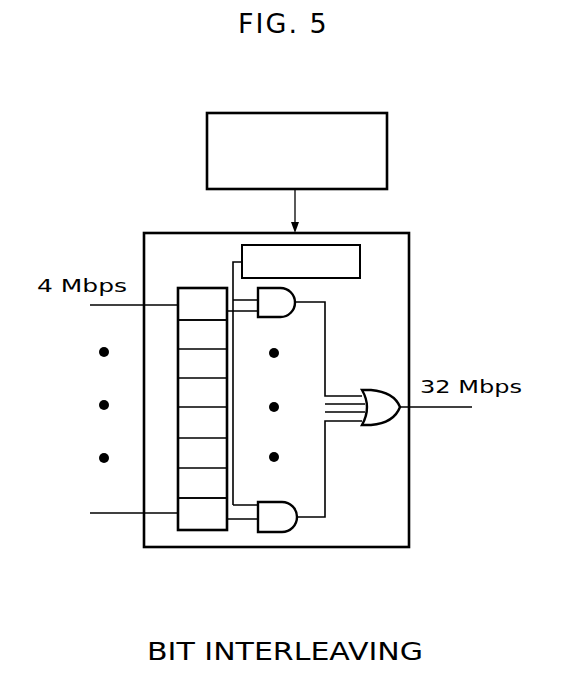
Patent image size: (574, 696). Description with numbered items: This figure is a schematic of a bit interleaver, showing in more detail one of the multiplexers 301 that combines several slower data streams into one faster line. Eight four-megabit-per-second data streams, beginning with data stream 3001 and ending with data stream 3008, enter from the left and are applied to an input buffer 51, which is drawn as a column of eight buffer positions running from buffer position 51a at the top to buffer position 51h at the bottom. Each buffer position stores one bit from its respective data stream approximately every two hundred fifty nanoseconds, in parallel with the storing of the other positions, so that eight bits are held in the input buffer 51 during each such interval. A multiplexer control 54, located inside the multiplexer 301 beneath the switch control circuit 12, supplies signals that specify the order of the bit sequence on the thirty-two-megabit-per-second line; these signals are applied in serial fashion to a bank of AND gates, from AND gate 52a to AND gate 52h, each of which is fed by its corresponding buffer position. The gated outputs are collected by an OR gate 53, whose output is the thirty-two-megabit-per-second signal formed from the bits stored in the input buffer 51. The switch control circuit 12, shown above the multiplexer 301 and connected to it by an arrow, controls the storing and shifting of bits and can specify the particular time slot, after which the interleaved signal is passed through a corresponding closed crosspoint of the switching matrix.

The switch control circuit 12 is at (387, 150).
The multiplexer 301 is at (409, 329).
The multiplexer control 54 is at (360, 262).
The input buffer 51 is at (178, 462).
The buffer position 51a is at (204, 298).
The buffer position 51h is at (200, 522).
The AND gate 52a is at (287, 290).
The AND gate 52h is at (278, 525).
The OR gate 53 is at (387, 412).
The 4 Mbps data stream 3001 is at (100, 308).
The 4 Mbps data stream 3008 is at (98, 516).